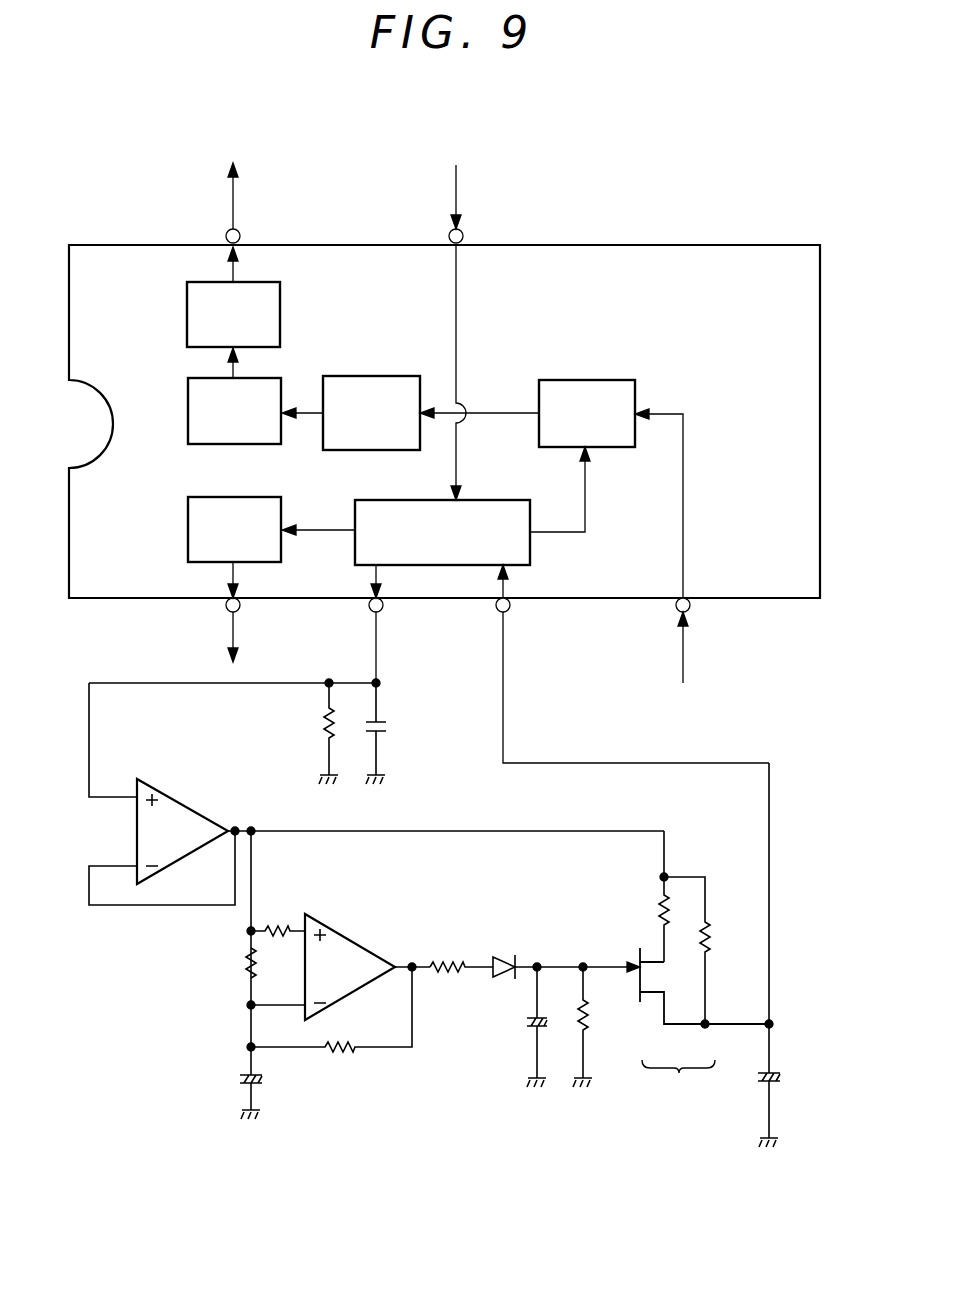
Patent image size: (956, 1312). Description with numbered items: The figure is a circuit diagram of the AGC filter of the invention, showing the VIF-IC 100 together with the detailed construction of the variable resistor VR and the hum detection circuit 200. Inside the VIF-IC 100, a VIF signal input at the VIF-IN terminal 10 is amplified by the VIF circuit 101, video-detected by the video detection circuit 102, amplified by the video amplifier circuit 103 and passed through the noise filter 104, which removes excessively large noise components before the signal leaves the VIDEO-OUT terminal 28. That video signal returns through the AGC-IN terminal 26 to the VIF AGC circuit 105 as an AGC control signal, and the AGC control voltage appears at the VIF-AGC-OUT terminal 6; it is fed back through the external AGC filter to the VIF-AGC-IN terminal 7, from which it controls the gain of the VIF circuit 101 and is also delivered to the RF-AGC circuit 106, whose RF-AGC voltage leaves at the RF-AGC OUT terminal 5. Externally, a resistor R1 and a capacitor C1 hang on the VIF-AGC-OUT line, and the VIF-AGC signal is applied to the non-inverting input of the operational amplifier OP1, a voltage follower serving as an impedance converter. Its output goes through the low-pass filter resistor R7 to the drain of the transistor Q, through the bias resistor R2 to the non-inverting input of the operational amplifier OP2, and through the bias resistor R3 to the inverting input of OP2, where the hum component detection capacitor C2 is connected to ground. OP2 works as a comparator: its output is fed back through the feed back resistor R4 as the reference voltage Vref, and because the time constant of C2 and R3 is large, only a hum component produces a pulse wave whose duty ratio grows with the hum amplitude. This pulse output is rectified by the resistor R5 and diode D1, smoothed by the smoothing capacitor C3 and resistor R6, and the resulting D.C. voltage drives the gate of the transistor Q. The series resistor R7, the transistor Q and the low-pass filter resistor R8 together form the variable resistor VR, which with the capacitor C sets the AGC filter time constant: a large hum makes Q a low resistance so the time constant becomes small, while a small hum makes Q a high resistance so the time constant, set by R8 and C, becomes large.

The VIF-IC 100 is at (655, 247).
The VIF circuit 101 is at (612, 380).
The video detection circuit 102 is at (378, 376).
The video amplifier circuit 103 is at (275, 378).
The noise filter 104 is at (281, 300).
The VIF AGC circuit 105 is at (483, 500).
The RF-AGC circuit 106 is at (268, 497).
The VIDEO-OUT terminal 28 is at (240, 231).
The AGC-IN terminal 26 is at (463, 231).
The RF-AGC OUT terminal 5 is at (240, 611).
The VIF-AGC-OUT terminal 6 is at (369, 610).
The VIF-AGC-IN terminal 7 is at (508, 613).
The VIF-IN terminal 10 is at (690, 611).
The hum detection circuit 200 is at (450, 1080).
The operational amplifier OP1 is at (165, 797).
The operational amplifier OP2 is at (330, 918).
The resistor R1 is at (320, 724).
The bias resistor R2 is at (280, 925).
The bias resistor R3 is at (246, 961).
The feed back resistor R4 is at (344, 1055).
The resistor R5 is at (447, 958).
The resistor R6 is at (592, 1018).
The low-pass filter resistor R7 is at (658, 905).
The low-pass filter resistor R8 is at (712, 936).
The capacitor C1 is at (385, 727).
The hum component detection capacitor C2 is at (240, 1082).
The smoothing capacitor C3 is at (527, 1022).
The capacitor C is at (788, 1078).
The diode D1 is at (504, 957).
The transistor Q is at (640, 948).
The variable resistor VR is at (678, 1087).
The reference voltage Vref is at (244, 1007).